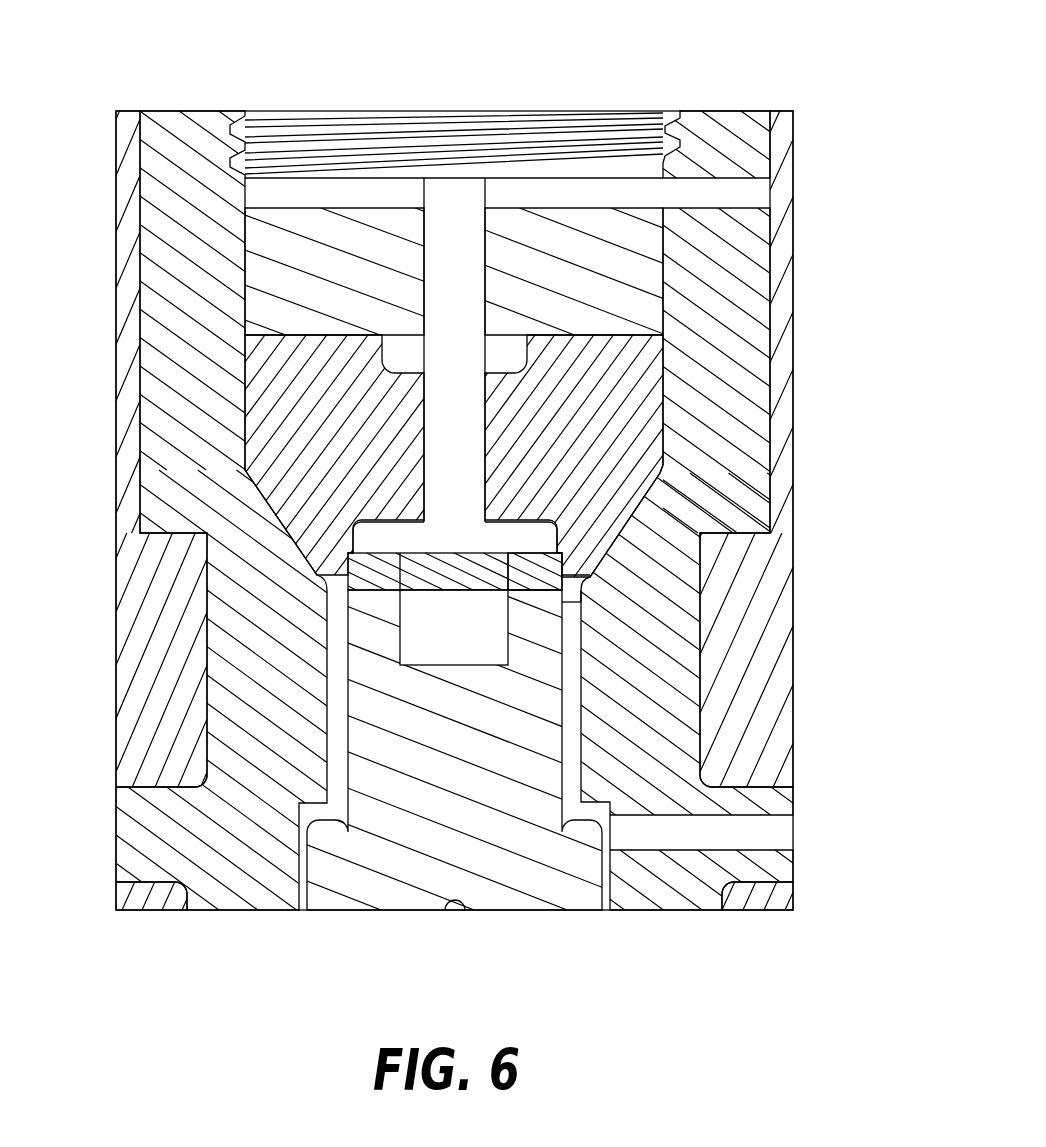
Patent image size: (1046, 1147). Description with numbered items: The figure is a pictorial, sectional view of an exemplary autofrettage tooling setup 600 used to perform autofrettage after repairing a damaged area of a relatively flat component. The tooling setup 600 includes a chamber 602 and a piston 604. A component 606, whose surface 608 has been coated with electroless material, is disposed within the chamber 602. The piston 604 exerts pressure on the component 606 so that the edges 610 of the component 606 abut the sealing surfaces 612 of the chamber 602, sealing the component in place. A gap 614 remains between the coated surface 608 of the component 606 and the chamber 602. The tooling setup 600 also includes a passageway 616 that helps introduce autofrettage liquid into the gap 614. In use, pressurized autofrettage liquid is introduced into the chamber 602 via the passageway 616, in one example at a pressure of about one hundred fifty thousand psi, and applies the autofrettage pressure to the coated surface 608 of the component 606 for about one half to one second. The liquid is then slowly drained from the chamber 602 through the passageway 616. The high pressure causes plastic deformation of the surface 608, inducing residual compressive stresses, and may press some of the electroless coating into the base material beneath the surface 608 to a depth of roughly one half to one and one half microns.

The autofrettage tooling setup 600 is at (634, 53).
The chamber 602 is at (740, 500).
The piston 604 is at (465, 804).
The component 606 is at (527, 580).
The surface 608 is at (490, 550).
The edges 610 is at (583, 600).
The sealing surfaces 612 is at (600, 598).
The gap 614 is at (405, 540).
The passageway 616 is at (438, 248).